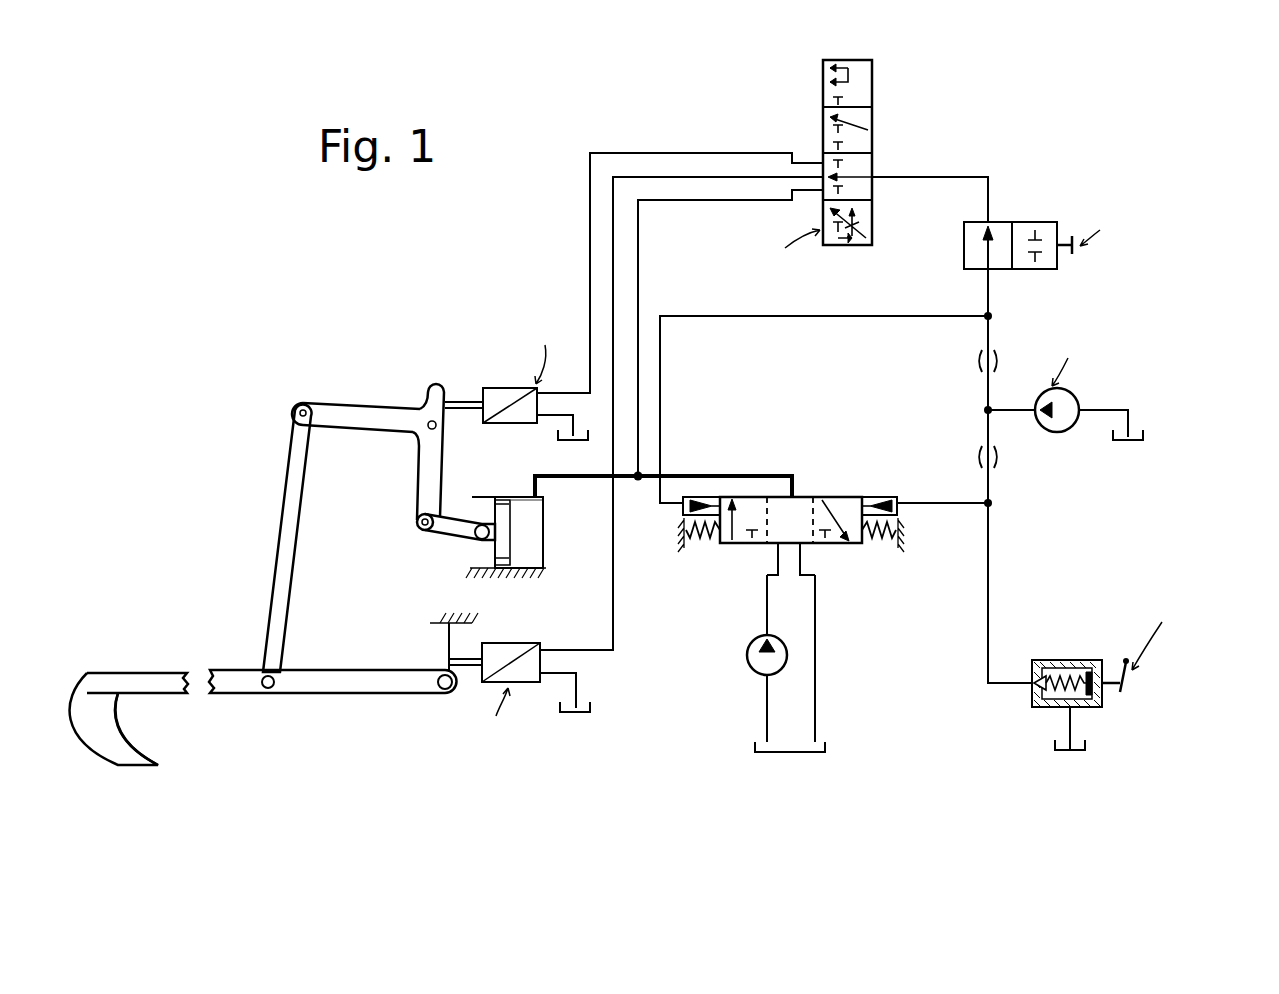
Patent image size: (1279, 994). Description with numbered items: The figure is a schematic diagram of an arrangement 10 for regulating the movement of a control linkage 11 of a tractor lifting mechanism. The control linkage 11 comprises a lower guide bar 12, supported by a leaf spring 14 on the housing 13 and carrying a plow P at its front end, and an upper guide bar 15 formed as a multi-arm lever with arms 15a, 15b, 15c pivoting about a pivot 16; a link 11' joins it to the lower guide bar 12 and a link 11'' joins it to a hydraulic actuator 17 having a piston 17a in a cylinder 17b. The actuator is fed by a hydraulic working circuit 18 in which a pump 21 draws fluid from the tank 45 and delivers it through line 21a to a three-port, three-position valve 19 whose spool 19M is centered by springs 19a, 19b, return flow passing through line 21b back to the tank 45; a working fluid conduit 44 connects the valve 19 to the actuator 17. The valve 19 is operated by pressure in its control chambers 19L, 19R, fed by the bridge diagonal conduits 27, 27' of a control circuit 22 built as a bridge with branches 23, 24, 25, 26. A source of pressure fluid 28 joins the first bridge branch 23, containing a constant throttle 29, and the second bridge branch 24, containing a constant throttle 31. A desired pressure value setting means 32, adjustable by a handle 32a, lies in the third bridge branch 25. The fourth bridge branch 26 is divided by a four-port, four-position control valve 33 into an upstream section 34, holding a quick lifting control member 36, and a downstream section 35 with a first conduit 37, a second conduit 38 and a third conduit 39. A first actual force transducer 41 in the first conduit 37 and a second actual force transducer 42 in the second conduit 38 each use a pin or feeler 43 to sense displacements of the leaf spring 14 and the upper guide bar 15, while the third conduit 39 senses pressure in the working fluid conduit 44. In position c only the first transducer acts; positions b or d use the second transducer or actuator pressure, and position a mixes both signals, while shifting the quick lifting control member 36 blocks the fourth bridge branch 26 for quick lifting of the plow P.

The arrangement 10 is at (415, 248).
The control linkage 11 is at (245, 589).
The link 11' is at (272, 538).
The link 11'' is at (450, 542).
The lower guide bar 12 is at (336, 672).
The housing 13 is at (534, 575).
The leaf spring 14 is at (446, 640).
The upper guide bar 15 is at (368, 445).
The arm 15a is at (348, 410).
The arm 15b is at (418, 478).
The arm 15c is at (435, 390).
The pivot 16 is at (424, 440).
The hydraulic actuator 17 is at (514, 523).
The piston 17a is at (492, 560).
The cylinder 17b is at (541, 544).
The hydraulic working circuit 18 is at (756, 597).
The three-port, three-position valve 19 is at (794, 494).
The control chamber 19L is at (684, 522).
The spool 19M is at (809, 487).
The control chamber 19R is at (872, 497).
The spring 19a is at (704, 542).
The spring 19b is at (876, 542).
The pump 21 is at (755, 660).
The line 21a is at (766, 614).
The line 21b is at (816, 630).
The control circuit 22 is at (1002, 308).
The first bridge branch 23 is at (986, 490).
The second bridge branch 24 is at (985, 343).
The third bridge branch 25 is at (990, 572).
The fourth bridge branch 26 is at (956, 167).
The bridge diagonal conduit 27 is at (824, 409).
The bridge diagonal conduit 27' is at (942, 516).
The source of pressure fluid 28 is at (1066, 402).
The constant throttle 29 is at (996, 458).
The constant throttle 31 is at (996, 362).
The desired pressure value setting means 32 is at (1066, 650).
The handle 32a is at (1124, 694).
The control valve 33 is at (811, 175).
The upstream section 34 is at (988, 198).
The downstream section 35 is at (689, 141).
The quick lifting control member 36 is at (1056, 262).
The first conduit 37 is at (614, 574).
The second conduit 38 is at (588, 280).
The third conduit 39 is at (640, 278).
The first actual force transducer 41 is at (522, 678).
The second actual force transducer 42 is at (504, 388).
The pin or feeler 43 is at (462, 402).
The working fluid conduit 44 is at (702, 472).
The tank 45 is at (556, 442).
The position a is at (866, 92).
The position b is at (866, 132).
The position c is at (866, 166).
The position d is at (866, 218).
The plow P is at (108, 724).